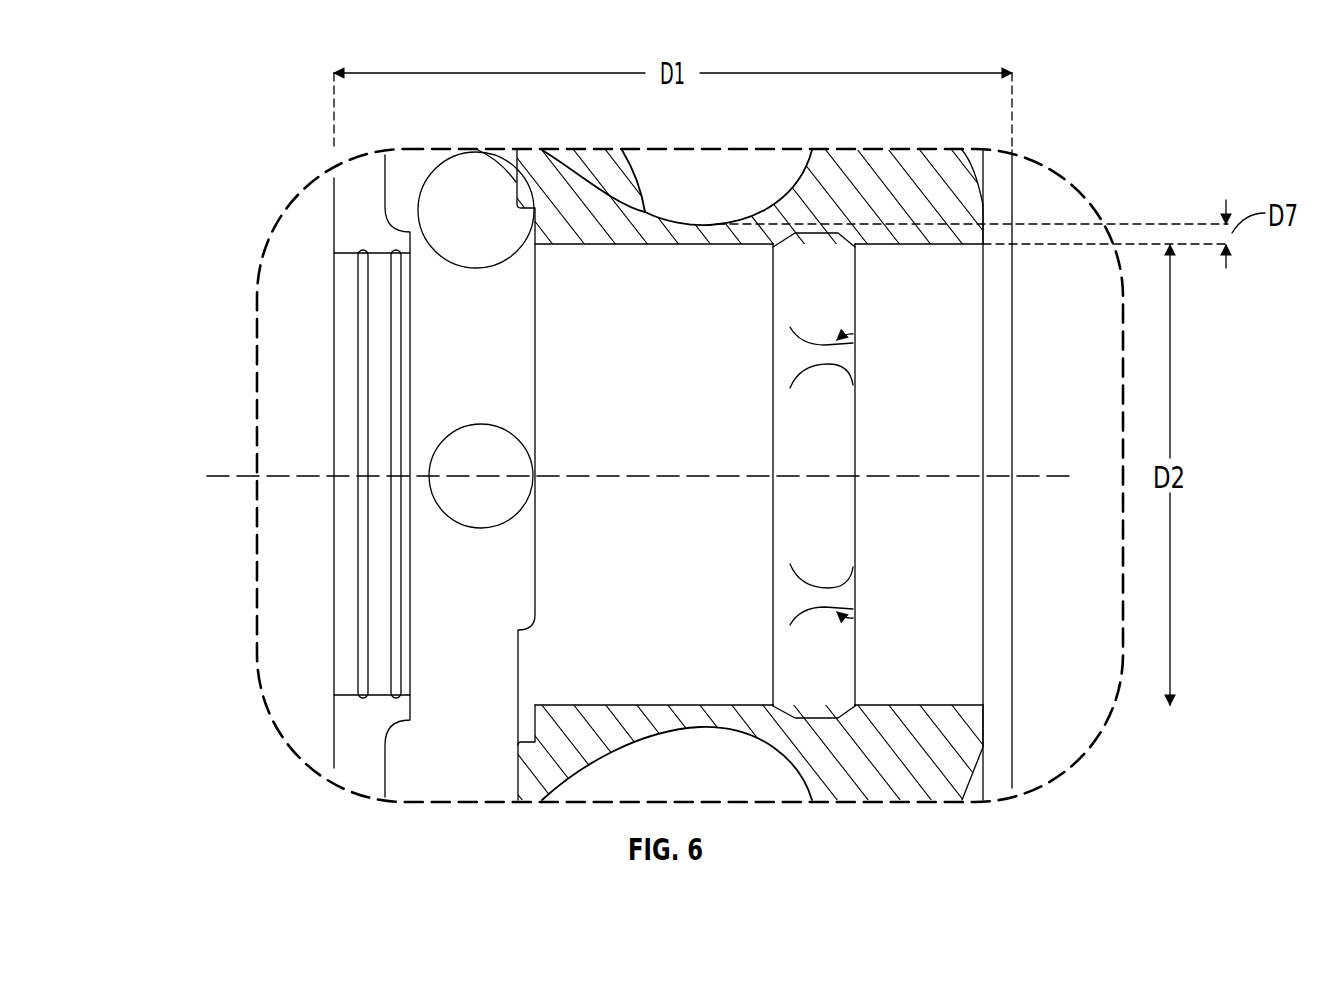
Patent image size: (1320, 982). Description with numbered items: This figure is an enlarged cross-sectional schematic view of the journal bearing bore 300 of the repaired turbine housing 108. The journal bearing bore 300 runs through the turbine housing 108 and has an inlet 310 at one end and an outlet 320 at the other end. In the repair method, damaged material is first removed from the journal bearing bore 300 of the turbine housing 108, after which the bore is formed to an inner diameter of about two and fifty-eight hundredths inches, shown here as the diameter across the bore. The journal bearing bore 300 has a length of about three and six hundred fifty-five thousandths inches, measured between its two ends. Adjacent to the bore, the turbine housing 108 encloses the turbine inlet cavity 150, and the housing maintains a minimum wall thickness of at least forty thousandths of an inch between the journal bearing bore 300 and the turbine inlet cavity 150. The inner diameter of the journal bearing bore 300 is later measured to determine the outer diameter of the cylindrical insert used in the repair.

The journal bearing bore 300 is at (213, 57).
The outlet 320 is at (333, 613).
The turbine housing 108 is at (913, 170).
The turbine inlet cavity 150 is at (730, 197).
The inlet 310 is at (1013, 578).